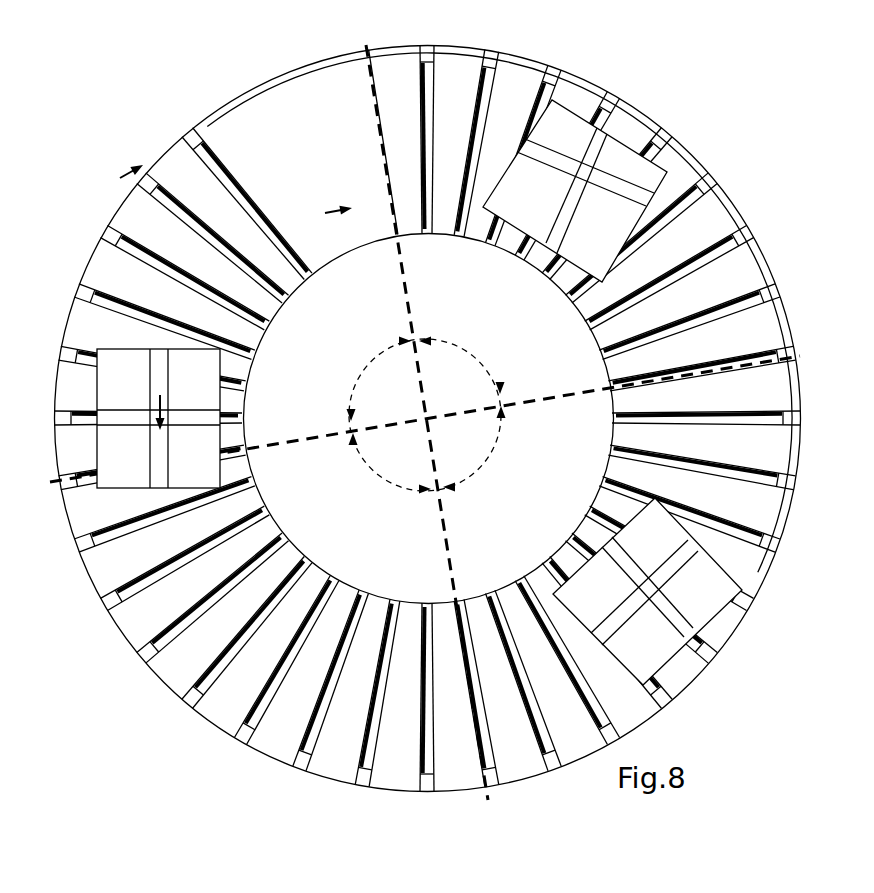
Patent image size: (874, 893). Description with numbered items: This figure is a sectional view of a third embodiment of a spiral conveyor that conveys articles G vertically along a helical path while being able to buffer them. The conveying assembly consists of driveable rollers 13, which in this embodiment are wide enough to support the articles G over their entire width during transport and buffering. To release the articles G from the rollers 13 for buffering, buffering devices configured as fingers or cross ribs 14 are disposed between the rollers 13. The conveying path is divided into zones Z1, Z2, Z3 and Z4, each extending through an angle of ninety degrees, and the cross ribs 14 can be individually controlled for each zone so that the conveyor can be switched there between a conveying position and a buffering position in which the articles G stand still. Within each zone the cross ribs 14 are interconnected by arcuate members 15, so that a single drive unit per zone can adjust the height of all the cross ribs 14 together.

The articles G is at (648, 177).
The rollers 13 is at (742, 265).
The cross ribs 14 is at (790, 472).
The arcuate members 15 is at (768, 295).
The zone Z1 is at (452, 362).
The zone Z2 is at (484, 449).
The zone Z3 is at (390, 473).
The zone Z4 is at (382, 379).